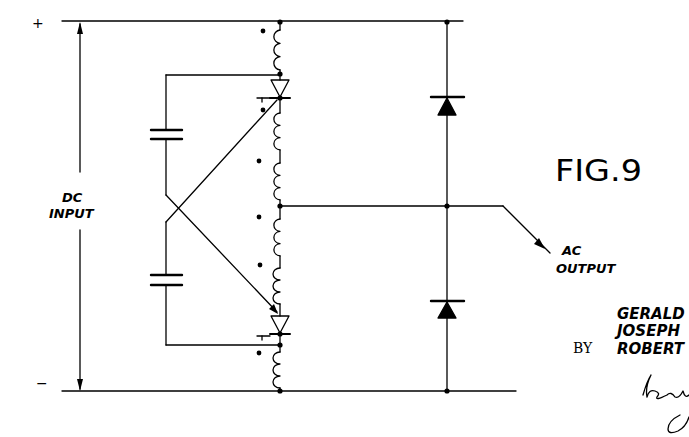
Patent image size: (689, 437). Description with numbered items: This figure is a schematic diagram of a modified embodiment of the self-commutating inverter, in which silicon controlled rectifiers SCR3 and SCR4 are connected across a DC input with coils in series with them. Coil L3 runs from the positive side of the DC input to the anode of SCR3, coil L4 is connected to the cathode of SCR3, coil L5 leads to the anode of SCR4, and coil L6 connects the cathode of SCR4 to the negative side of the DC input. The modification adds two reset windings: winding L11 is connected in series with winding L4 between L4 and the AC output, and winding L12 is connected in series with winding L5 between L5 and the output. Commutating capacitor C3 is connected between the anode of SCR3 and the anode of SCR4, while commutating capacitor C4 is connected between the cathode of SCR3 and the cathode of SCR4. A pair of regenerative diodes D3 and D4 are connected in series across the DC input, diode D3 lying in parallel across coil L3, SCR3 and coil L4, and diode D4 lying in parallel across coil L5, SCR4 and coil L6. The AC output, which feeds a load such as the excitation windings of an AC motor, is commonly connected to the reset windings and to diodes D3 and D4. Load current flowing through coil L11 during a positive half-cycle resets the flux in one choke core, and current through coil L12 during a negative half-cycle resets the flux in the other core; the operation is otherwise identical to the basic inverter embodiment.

The coil L3 is at (284, 52).
The coil L4 is at (284, 127).
The reset winding L11 is at (284, 178).
The reset winding L12 is at (284, 234).
The coil L5 is at (284, 290).
The coil L6 is at (284, 366).
The silicon controlled rectifier SCR3 is at (291, 91).
The silicon controlled rectifier SCR4 is at (291, 326).
The commutating capacitor C3 is at (146, 131).
The commutating capacitor C4 is at (146, 275).
The regenerative diode D3 is at (452, 112).
The regenerative diode D4 is at (452, 314).